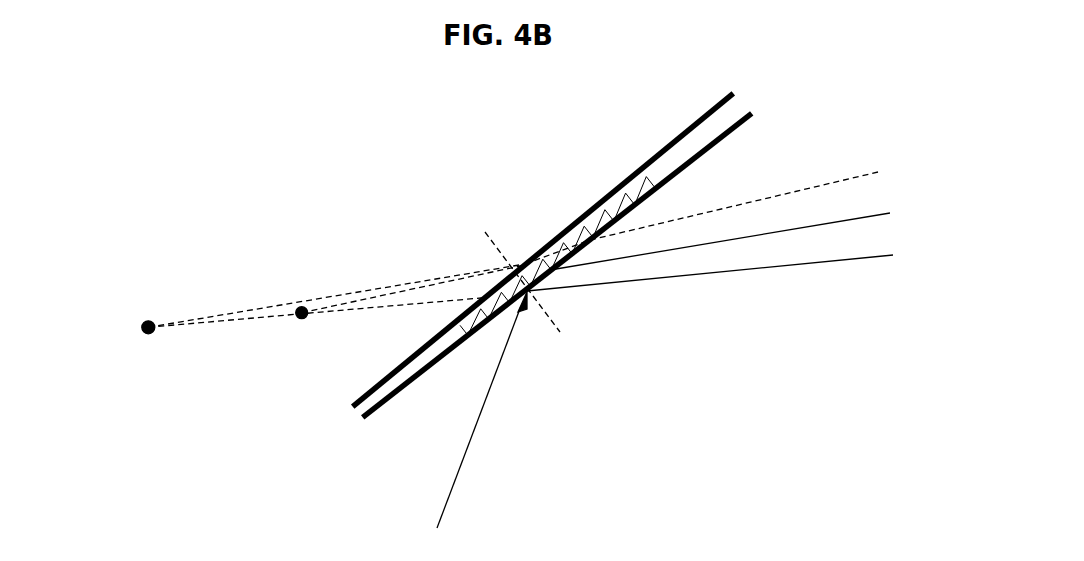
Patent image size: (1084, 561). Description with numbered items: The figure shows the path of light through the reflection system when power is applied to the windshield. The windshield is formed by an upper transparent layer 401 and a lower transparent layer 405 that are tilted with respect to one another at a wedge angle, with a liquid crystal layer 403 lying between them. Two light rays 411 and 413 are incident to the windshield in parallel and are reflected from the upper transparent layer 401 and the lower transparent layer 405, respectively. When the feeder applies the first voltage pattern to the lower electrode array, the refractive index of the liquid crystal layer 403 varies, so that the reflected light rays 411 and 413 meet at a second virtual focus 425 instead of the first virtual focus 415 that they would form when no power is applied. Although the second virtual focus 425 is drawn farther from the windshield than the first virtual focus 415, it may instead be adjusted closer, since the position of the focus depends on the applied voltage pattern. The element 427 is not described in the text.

The upper transparent layer 401 is at (363, 393).
The liquid crystal layer 403 is at (518, 281).
The lower transparent layer 405 is at (378, 406).
The light ray 411 is at (494, 382).
The light ray 413 is at (857, 218).
The first virtual focus 415 is at (297, 318).
The second virtual focus 425 is at (141, 324).
The diffraction grating 427 is at (453, 321).